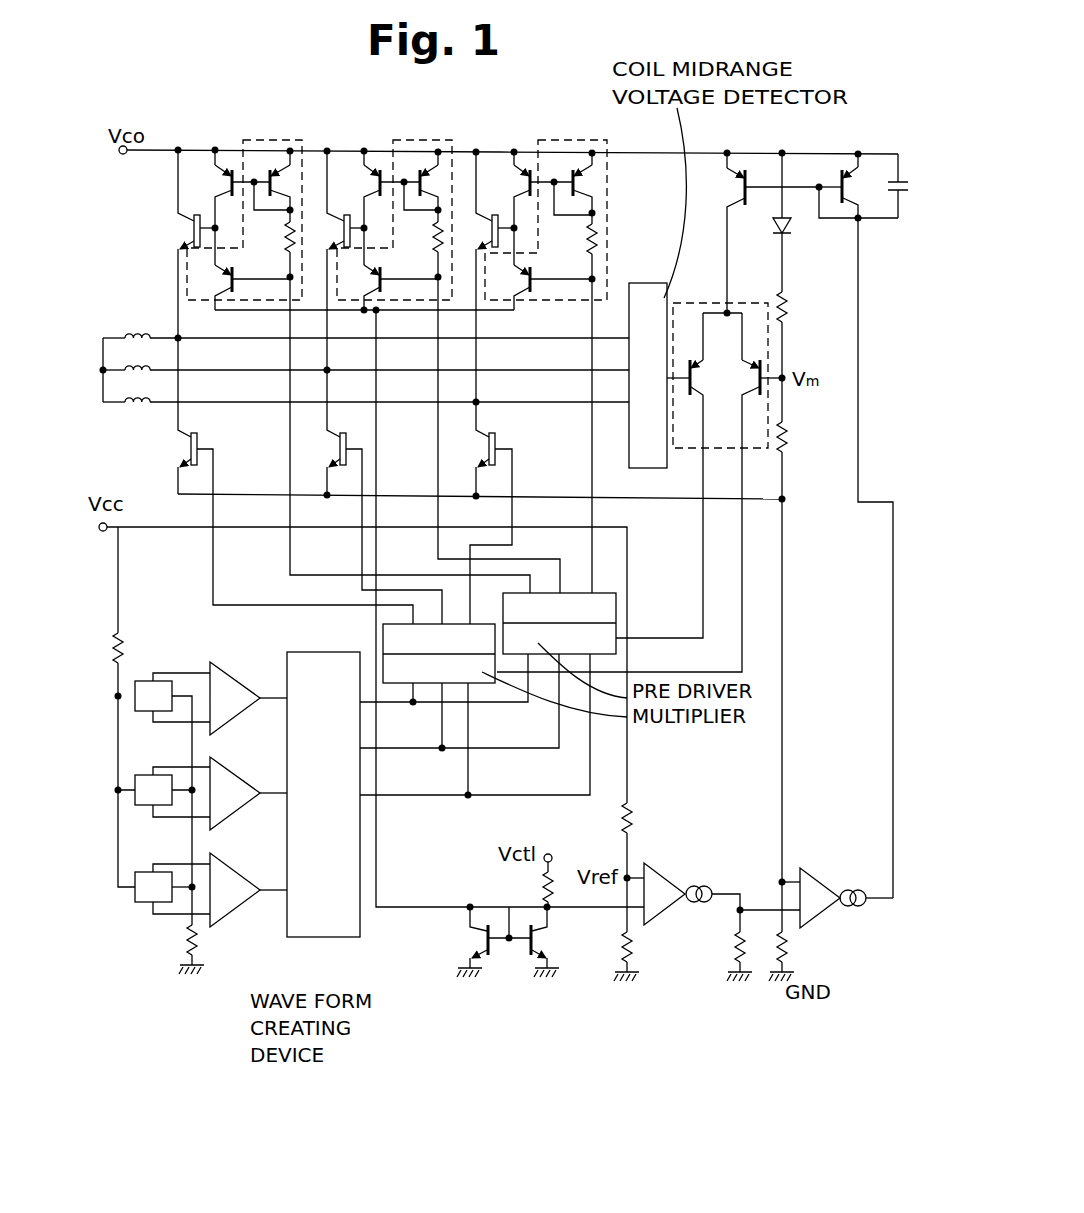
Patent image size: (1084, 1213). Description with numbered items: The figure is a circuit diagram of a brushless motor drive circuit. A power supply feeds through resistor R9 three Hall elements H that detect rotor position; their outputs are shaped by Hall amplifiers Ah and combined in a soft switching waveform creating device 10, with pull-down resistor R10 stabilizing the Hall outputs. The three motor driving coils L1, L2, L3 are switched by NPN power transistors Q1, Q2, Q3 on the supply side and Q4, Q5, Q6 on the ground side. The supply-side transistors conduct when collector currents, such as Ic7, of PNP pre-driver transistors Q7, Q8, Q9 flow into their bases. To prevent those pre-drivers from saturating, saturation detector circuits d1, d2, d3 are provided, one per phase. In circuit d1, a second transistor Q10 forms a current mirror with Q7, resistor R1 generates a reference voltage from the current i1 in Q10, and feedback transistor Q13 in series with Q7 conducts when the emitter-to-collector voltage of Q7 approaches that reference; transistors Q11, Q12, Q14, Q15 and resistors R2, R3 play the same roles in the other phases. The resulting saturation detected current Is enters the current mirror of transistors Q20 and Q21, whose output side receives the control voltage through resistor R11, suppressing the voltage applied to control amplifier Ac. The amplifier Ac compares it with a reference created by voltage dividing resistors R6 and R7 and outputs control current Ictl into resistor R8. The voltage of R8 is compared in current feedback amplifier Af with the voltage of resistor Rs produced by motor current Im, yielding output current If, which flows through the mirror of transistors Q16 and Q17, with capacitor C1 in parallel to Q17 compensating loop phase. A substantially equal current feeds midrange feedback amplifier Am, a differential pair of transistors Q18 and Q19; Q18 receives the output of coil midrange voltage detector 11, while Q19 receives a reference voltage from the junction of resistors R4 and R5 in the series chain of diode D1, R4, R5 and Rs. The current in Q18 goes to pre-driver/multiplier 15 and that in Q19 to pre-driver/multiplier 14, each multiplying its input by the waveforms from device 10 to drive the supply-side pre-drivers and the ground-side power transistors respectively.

The 120° soft switching waveform creating device 10 is at (326, 930).
The coil midrange voltage detector 11 is at (652, 283).
The pre-driver/multiplier 14 is at (381, 631).
The pre-driver/multiplier 15 is at (615, 597).
The power transistor Q1 is at (182, 244).
The power transistor Q2 is at (333, 260).
The power transistor Q3 is at (483, 277).
The power transistor Q4 is at (281, 481).
The power transistor Q5 is at (372, 497).
The power transistor Q6 is at (482, 513).
The first transistor Q7 is at (230, 207).
The first transistor Q8 is at (381, 208).
The first transistor Q9 is at (531, 208).
The second transistor Q10 is at (282, 182).
The second transistor Q11 is at (432, 182).
The second transistor Q12 is at (582, 183).
The current feedback transistor Q13 is at (238, 287).
The current feedback transistor Q14 is at (387, 287).
The current feedback transistor Q15 is at (539, 287).
The current mirror transistor Q16 is at (759, 233).
The current mirror transistor Q17 is at (852, 186).
The transistor Q18 is at (724, 354).
The transistor Q19 is at (628, 527).
The current mirror transistor Q20 is at (481, 942).
The current mirror transistor Q21 is at (555, 942).
The resistor R1 is at (278, 260).
The resistor R2 is at (423, 260).
The resistor R3 is at (580, 260).
The resistor R4 is at (797, 335).
The resistor R5 is at (797, 438).
The voltage dividing resistor R6 is at (641, 840).
The voltage dividing resistor R7 is at (635, 929).
The resistor R8 is at (728, 945).
The resistor R9 is at (133, 707).
The pull-down resistor R10 is at (177, 949).
The resistor R11 is at (566, 884).
The resistor Rs is at (790, 931).
The capacitor C1 is at (908, 186).
The diode D1 is at (796, 222).
The motor driving coil L1 is at (366, 323).
The motor driving coil L2 is at (366, 357).
The motor driving coil L3 is at (366, 389).
The saturation detector circuit d1 is at (244, 208).
The saturation detector circuit d2 is at (394, 208).
The saturation detector circuit d3 is at (546, 208).
The midrange feedback amplifier Am is at (720, 364).
The control amplifier Ac is at (670, 882).
The current feedback amplifier Af is at (820, 885).
The Hall amplifier Ah is at (248, 794).
The Hall element H is at (164, 799).
The collector current Ic7 is at (208, 216).
The current i1 is at (279, 414).
The motor current Im is at (760, 492).
The saturation detected current Is is at (414, 898).
The control current Ictl is at (750, 904).
The output current If is at (870, 891).